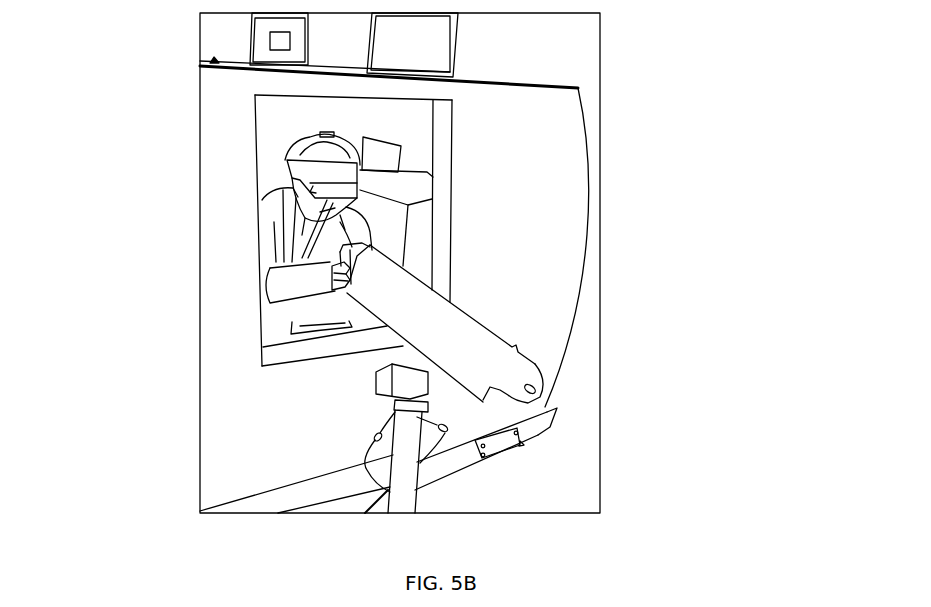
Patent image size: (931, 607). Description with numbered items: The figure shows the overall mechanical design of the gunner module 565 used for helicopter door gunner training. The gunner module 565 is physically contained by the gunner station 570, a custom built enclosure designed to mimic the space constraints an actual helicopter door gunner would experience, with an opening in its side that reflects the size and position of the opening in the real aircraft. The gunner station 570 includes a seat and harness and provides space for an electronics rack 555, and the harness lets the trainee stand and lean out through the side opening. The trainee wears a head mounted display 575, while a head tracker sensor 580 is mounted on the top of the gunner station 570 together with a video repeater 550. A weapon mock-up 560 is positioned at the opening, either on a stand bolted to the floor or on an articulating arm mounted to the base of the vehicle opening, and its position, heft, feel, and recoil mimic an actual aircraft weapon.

The video repeater 550 is at (458, 47).
The electronics rack 555 is at (421, 199).
The weapon mock-up 560 is at (478, 317).
The UH-60 gunner module 565 is at (661, 431).
The gunner station 570 is at (229, 428).
The head mounted display 575 is at (334, 190).
The head tracker sensor 580 is at (211, 60).